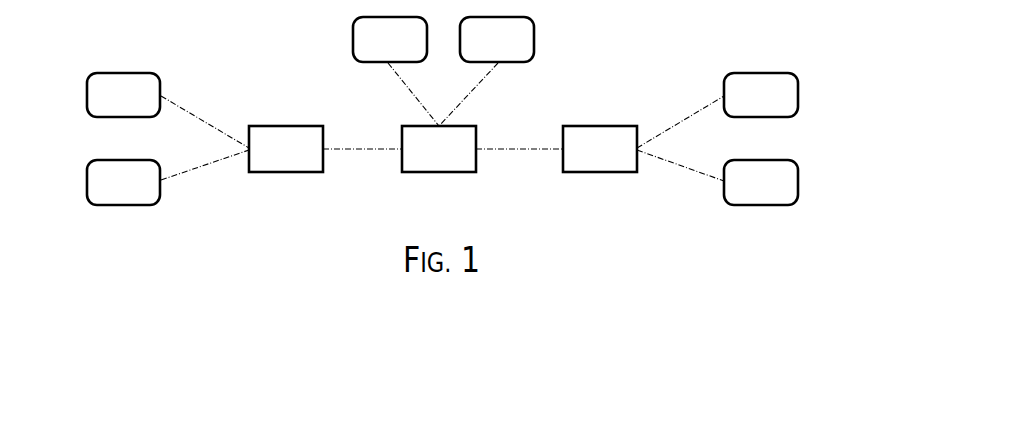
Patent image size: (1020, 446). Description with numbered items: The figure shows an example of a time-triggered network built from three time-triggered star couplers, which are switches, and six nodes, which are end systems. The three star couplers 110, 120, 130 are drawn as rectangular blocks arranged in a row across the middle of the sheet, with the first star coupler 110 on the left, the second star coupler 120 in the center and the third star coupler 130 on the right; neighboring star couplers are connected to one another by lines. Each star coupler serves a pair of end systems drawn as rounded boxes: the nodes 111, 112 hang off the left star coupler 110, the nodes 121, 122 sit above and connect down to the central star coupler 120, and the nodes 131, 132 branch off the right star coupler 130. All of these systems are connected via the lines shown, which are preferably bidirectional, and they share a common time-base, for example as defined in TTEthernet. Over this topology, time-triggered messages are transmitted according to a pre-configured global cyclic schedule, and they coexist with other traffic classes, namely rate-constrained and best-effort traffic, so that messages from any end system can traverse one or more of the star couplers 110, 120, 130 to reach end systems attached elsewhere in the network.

The time-triggered star coupler 110 is at (287, 175).
The node 111 is at (84, 184).
The node 112 is at (84, 93).
The time-triggered star coupler 120 is at (439, 175).
The node 121 is at (343, 37).
The node 122 is at (544, 37).
The time-triggered star coupler 130 is at (600, 175).
The node 131 is at (800, 93).
The node 132 is at (800, 183).